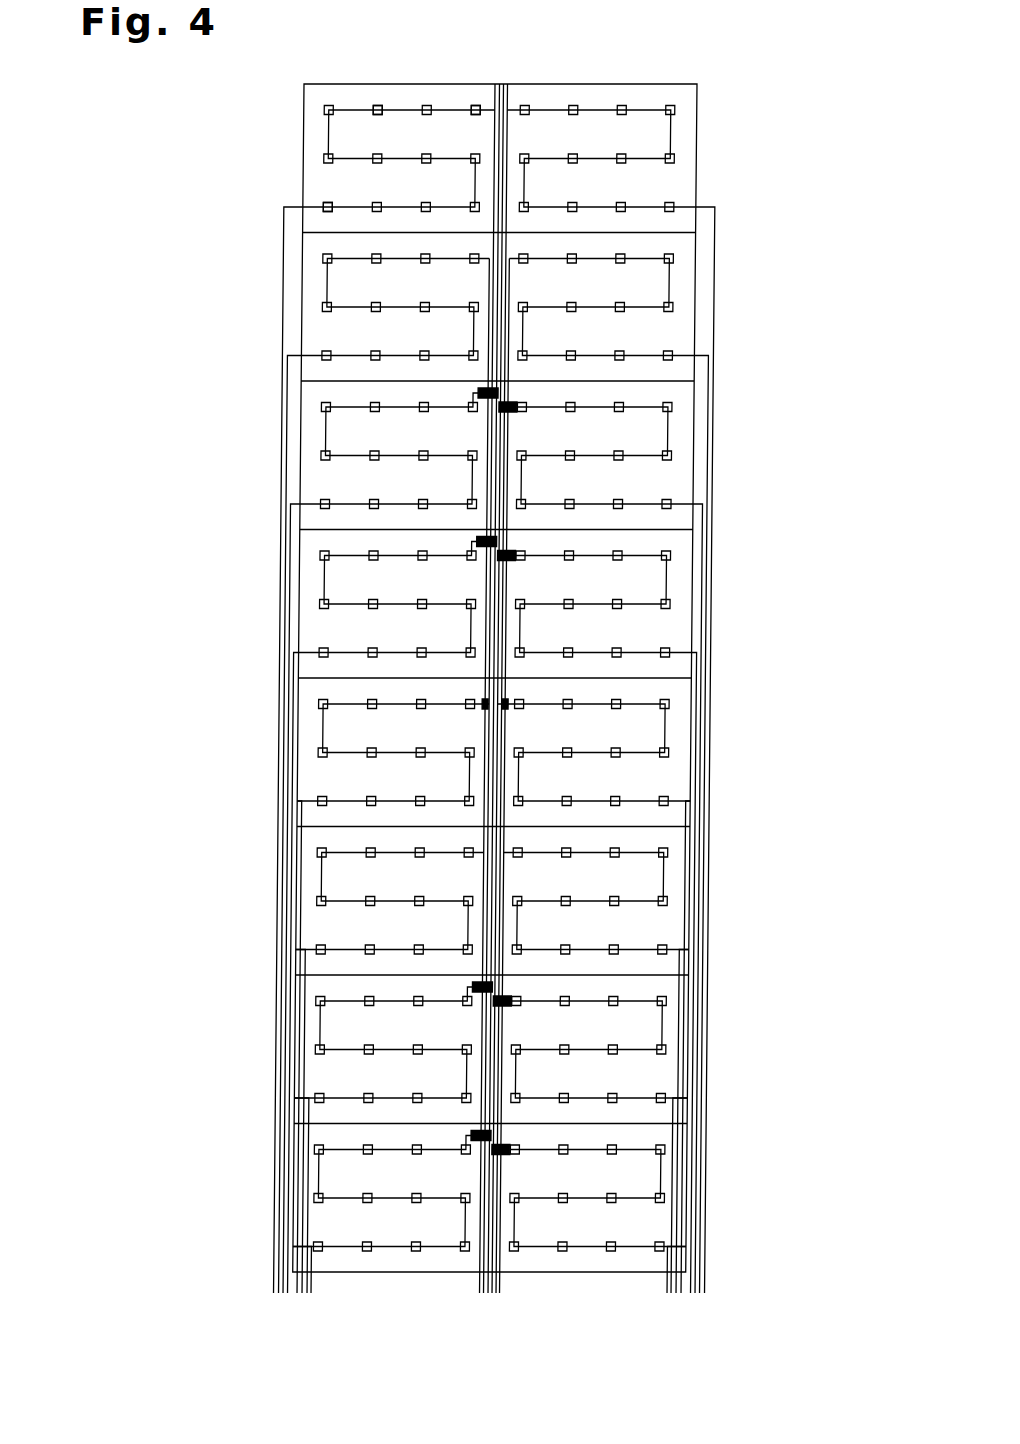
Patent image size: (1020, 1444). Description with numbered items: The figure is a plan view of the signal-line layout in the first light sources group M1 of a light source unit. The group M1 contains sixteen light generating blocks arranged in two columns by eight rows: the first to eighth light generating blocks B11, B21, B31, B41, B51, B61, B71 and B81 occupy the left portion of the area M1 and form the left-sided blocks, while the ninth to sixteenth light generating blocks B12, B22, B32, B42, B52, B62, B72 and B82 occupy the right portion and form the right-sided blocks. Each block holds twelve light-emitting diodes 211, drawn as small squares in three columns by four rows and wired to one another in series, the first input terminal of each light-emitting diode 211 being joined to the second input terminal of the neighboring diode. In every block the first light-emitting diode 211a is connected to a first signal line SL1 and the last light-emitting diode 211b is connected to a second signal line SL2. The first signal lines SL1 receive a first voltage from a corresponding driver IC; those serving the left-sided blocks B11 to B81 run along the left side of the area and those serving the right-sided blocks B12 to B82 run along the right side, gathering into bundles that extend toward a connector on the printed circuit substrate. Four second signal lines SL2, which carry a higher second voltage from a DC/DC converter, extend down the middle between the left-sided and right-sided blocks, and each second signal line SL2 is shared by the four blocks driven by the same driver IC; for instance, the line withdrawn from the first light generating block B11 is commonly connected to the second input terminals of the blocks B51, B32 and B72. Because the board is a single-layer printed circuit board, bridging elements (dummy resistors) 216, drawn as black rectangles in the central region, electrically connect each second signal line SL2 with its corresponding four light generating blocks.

The light-emitting diode 211 is at (380, 105).
The first light-emitting diode 211a is at (356, 189).
The last light-emitting diode 211b is at (476, 105).
The bridging element (dummy resistor) 216 is at (517, 414).
The first light generating block B11 is at (303, 143).
The ninth light generating block B12 is at (697, 145).
The second light generating block B21 is at (302, 292).
The tenth light generating block B22 is at (695, 295).
The third light generating block B31 is at (300, 440).
The eleventh light generating block B32 is at (694, 444).
The fourth light generating block B41 is at (299, 588).
The twelfth light generating block B42 is at (692, 592).
The fifth light generating block B51 is at (298, 736).
The thirteenth light generating block B52 is at (690, 740).
The sixth light generating block B61 is at (296, 885).
The fourteenth light generating block B62 is at (690, 889).
The seventh light generating block B71 is at (295, 1033).
The fifteenth light generating block B72 is at (688, 1037).
The eighth light generating block B81 is at (294, 1180).
The sixteenth light generating block B82 is at (686, 1185).
The first signal line SL1 is at (268, 1260).
The second signal line SL2 is at (517, 1173).
The first light sources group M1 is at (741, 40).